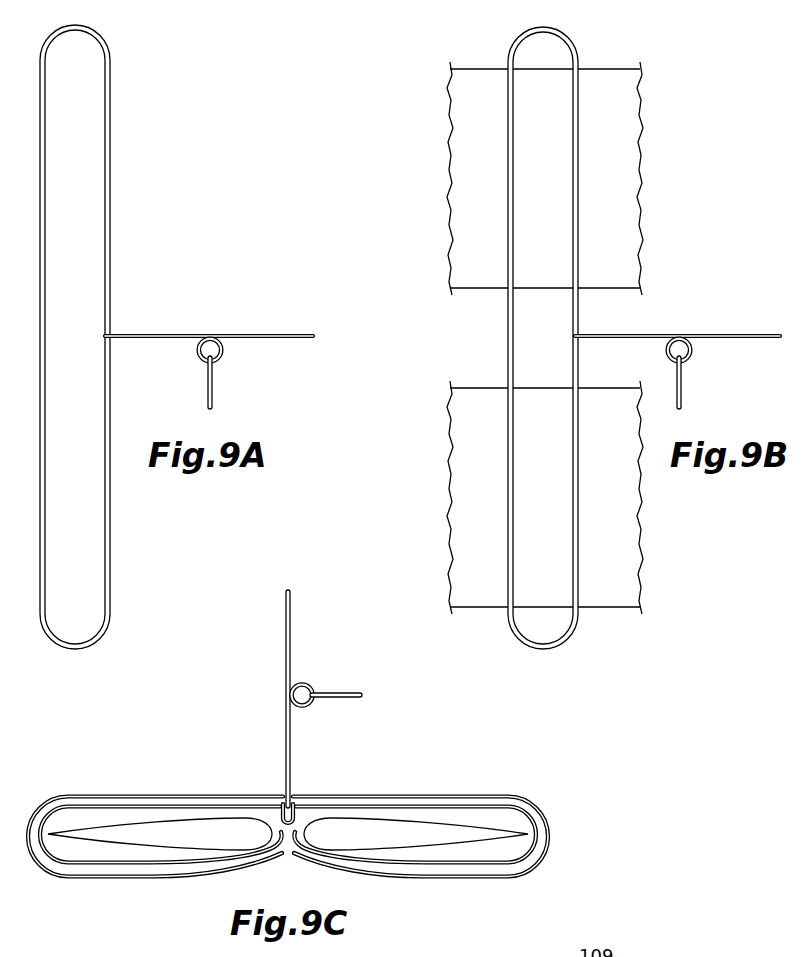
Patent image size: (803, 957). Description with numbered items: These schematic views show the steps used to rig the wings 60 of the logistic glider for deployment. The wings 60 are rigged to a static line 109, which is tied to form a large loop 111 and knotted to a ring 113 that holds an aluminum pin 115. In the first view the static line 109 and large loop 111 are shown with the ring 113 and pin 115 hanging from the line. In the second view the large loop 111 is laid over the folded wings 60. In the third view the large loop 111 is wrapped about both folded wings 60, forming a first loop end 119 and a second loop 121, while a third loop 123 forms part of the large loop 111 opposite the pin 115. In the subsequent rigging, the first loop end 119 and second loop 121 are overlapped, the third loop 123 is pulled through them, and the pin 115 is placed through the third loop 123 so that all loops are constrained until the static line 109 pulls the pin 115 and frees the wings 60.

In FIG. 9B, the wings 60 is at (491, 190).
In FIG. 9C, the wings 60 is at (210, 846).
In FIG. 9A, the static line 109 is at (280, 334).
In FIG. 9B, the static line 109 is at (748, 334).
In FIG. 9C, the static line 109 is at (286, 632).
In FIG. 9A, the large loop 111 is at (110, 139).
In FIG. 9B, the large loop 111 is at (578, 302).
In FIG. 9A, the ring 113 is at (223, 350).
In FIG. 9B, the ring 113 is at (692, 350).
In FIG. 9C, the ring 113 is at (305, 683).
In FIG. 9A, the aluminum pin 115 is at (212, 386).
In FIG. 9B, the aluminum pin 115 is at (681, 386).
In FIG. 9C, the aluminum pin 115 is at (340, 690).
In FIG. 9C, the first loop end 119 is at (279, 830).
In FIG. 9C, the second loop 121 is at (300, 822).
In FIG. 9C, the third loop 123 is at (286, 805).